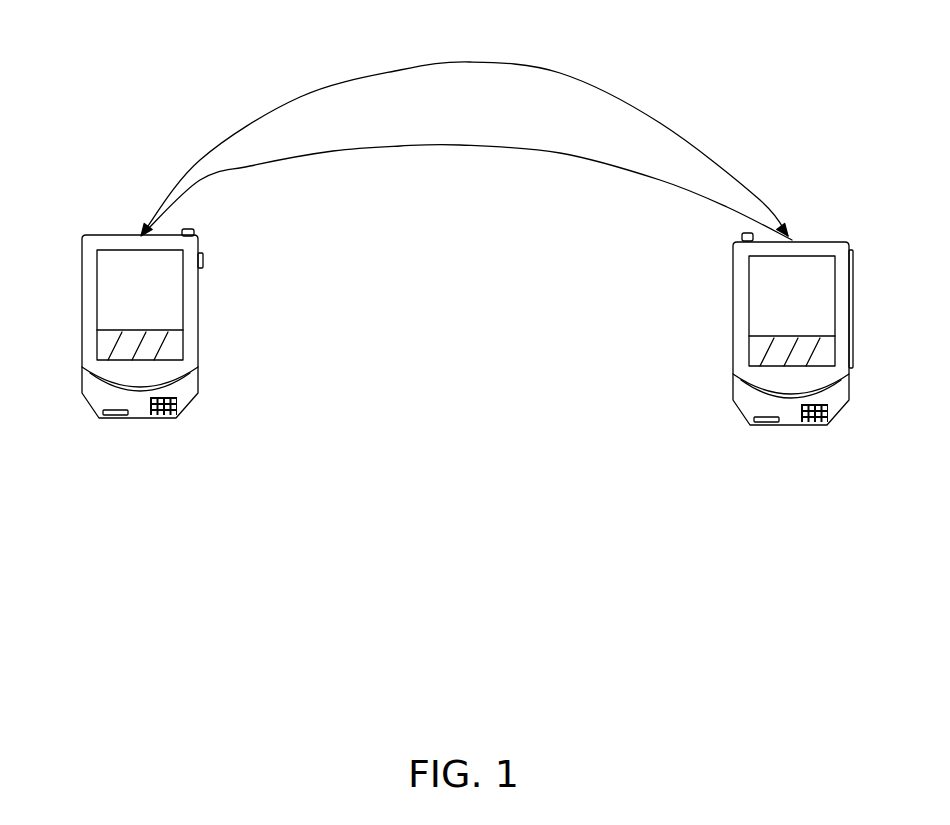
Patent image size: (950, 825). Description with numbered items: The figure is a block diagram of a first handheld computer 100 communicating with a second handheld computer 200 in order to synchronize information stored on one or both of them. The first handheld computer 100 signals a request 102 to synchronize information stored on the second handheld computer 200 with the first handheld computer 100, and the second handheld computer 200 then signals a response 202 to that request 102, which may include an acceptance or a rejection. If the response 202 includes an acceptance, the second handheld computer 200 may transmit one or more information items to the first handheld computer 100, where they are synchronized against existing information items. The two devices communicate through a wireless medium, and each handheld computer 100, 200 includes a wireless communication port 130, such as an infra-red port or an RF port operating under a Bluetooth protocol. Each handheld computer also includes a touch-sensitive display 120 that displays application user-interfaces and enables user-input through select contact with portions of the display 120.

The first handheld computer 100 is at (57, 225).
The second handheld computer 200 is at (692, 343).
The touch-sensitive display 120 is at (141, 235).
The wireless communication port 130 is at (196, 234).
The request 102 is at (492, 130).
The response 202 is at (550, 48).